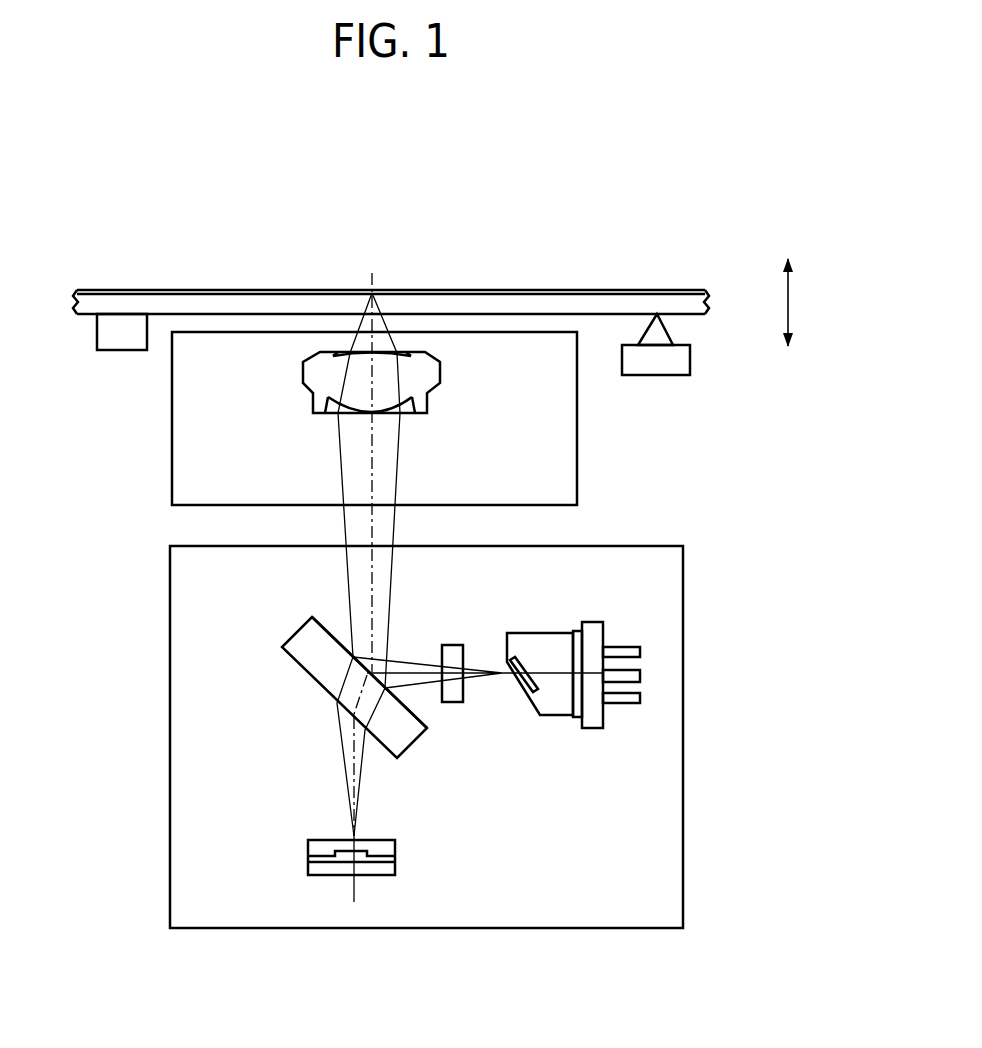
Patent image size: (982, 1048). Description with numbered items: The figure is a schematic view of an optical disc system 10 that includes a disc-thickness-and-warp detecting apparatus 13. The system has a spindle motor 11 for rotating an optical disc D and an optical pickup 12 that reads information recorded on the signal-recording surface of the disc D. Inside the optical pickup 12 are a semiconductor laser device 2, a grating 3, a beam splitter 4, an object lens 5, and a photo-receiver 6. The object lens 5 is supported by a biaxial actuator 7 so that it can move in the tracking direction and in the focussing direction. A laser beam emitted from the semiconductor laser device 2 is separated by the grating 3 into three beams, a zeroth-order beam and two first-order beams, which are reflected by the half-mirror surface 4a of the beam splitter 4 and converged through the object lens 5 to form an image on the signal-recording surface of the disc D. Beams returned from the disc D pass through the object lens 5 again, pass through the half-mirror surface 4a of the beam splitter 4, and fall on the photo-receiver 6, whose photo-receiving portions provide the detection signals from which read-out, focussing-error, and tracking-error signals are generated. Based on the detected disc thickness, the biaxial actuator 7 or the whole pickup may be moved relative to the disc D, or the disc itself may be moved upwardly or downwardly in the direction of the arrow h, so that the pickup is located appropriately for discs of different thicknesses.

The optical disc system 10 is at (634, 206).
The optical disc D is at (587, 290).
The arrow h is at (805, 302).
The spindle motor 11 is at (118, 338).
The disc-thickness-and-warp detecting apparatus 13 is at (657, 380).
The biaxial actuator 7 is at (170, 475).
The object lens 5 is at (440, 371).
The optical pickup 12 is at (201, 930).
The beam splitter 4 is at (312, 675).
The half-mirror surface 4a is at (327, 626).
The grating 3 is at (452, 703).
The semiconductor laser device 2 is at (555, 715).
The photo-receiver 6 is at (308, 844).